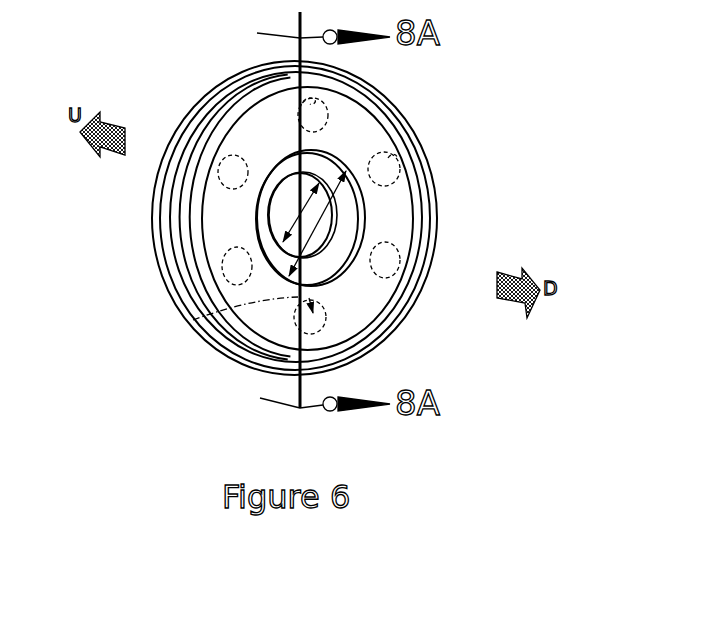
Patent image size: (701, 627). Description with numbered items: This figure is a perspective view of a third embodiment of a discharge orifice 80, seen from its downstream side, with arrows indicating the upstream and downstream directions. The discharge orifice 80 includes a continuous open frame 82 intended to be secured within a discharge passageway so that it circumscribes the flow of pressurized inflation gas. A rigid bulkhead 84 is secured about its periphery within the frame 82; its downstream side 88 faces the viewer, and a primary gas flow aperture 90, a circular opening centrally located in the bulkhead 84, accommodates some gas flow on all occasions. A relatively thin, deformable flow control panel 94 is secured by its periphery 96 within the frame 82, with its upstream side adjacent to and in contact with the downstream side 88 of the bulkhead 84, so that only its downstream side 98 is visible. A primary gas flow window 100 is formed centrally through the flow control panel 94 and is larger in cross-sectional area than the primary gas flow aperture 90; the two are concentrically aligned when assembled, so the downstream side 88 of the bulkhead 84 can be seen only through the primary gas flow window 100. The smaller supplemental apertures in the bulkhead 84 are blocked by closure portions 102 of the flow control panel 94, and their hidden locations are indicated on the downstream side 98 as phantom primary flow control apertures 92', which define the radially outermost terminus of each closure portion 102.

The discharge orifice 80 is at (450, 49).
The continuous open frame 82 is at (190, 121).
The rigid bulkhead 84 is at (346, 198).
The downstream side of bulkhead 88 is at (343, 222).
The primary gas flow aperture 90 is at (298, 213).
The phantom primary flow control apertures 92' is at (398, 110).
The flow control panel 94 is at (392, 226).
The periphery of flow control panel 96 is at (209, 233).
The downstream side of flow control panel 98 is at (283, 147).
The primary gas flow window 100 is at (320, 232).
The closure portions 102 is at (236, 266).